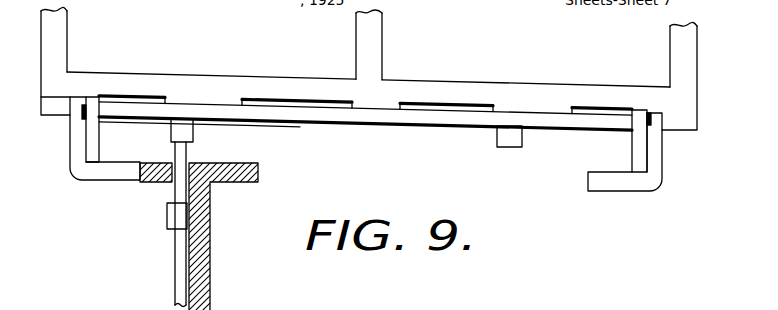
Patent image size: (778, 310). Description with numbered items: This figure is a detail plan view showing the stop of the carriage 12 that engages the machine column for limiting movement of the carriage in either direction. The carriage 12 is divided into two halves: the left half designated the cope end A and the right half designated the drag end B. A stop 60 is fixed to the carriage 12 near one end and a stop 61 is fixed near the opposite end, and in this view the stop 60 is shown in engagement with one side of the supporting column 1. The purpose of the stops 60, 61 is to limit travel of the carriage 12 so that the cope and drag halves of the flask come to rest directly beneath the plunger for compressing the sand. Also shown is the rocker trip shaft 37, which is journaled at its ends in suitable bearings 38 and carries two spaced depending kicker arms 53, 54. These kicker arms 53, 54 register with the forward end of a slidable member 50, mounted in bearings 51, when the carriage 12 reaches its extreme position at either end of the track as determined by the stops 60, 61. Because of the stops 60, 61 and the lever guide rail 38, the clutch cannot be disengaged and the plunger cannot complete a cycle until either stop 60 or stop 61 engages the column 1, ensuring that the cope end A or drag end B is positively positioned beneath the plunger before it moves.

The supporting column 1 is at (199, 187).
The carriage 12 is at (372, 60).
The rocker trip shaft 37 is at (437, 116).
The bearings 38 is at (97, 100).
The slidable member 50 is at (195, 158).
The bearings 51 is at (173, 217).
The kicker arm 53 is at (516, 140).
The kicker arm 54 is at (183, 133).
The stop 60 is at (104, 170).
The stop 61 is at (625, 182).
The cope end A is at (662, 76).
The drag end B is at (70, 61).